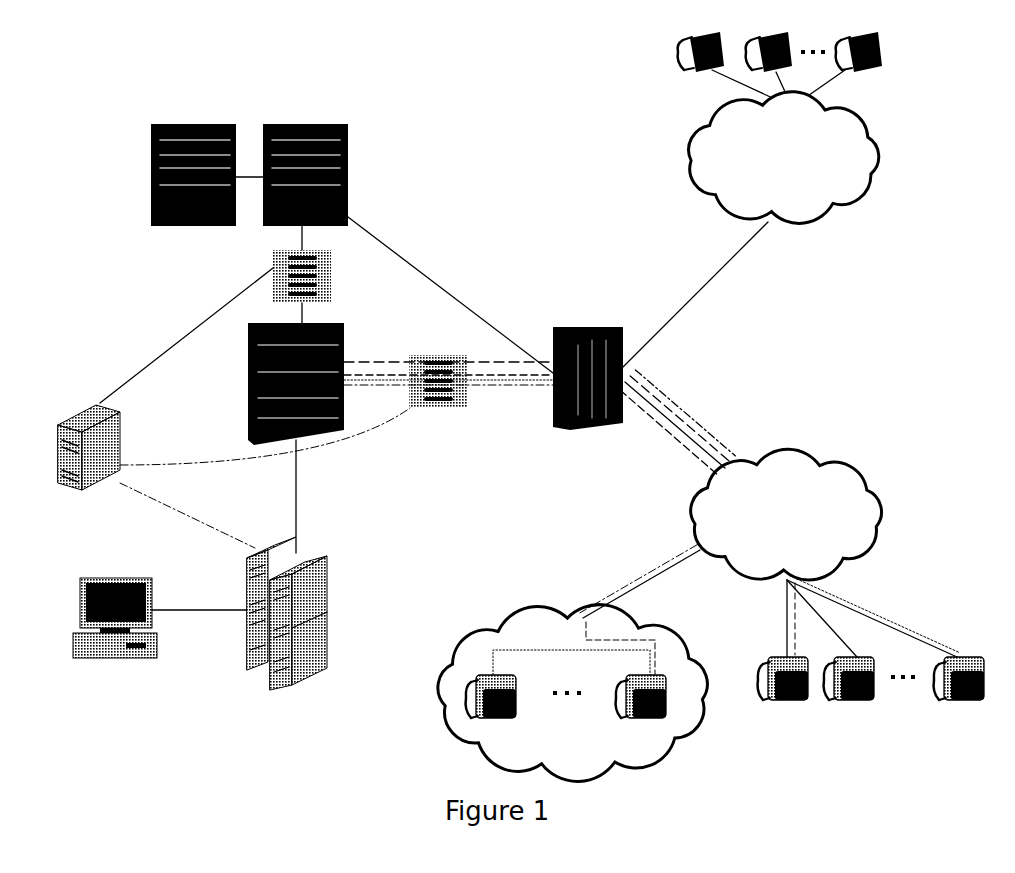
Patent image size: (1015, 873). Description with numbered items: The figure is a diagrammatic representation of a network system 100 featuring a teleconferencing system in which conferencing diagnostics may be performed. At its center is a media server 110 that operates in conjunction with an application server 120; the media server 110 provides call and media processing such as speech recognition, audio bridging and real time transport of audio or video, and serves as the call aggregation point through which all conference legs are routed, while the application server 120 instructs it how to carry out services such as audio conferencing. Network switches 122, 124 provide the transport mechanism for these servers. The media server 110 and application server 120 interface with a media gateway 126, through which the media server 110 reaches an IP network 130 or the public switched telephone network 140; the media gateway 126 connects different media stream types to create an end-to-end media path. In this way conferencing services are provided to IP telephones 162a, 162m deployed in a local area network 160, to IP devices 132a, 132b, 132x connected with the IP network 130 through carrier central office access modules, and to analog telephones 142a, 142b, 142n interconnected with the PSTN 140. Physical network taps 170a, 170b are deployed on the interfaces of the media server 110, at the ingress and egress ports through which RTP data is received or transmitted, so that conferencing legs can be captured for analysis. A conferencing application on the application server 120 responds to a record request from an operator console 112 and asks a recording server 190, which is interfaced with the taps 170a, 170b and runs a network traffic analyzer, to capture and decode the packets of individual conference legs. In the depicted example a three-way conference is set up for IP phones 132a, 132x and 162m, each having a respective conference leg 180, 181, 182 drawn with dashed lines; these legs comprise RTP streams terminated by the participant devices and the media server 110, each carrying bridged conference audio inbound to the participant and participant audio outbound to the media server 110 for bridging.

The network system 100 is at (514, 94).
The media server 110 is at (248, 366).
The conferencing service provider operator console 112 is at (80, 612).
The application server 120 is at (248, 556).
The network switch 122 is at (349, 140).
The network switch 124 is at (150, 142).
The media gateway 126 is at (598, 326).
The IP network 130 is at (786, 514).
The IP device 132a is at (795, 702).
The IP device 132b is at (861, 702).
The IP device 132x is at (975, 702).
The public switched telephone network 140 is at (784, 158).
The analog telephone 142a is at (700, 36).
The analog telephone 142b is at (768, 36).
The analog telephone 142n is at (858, 36).
The local area network 160 is at (572, 693).
The IP telephone 162a is at (518, 718).
The IP telephone 162m is at (652, 718).
The tap 170a is at (331, 262).
The tap 170b is at (437, 410).
The conference leg 180 is at (806, 620).
The conference leg 181 is at (900, 600).
The conference leg 182 is at (492, 386).
The recording server 190 is at (120, 424).